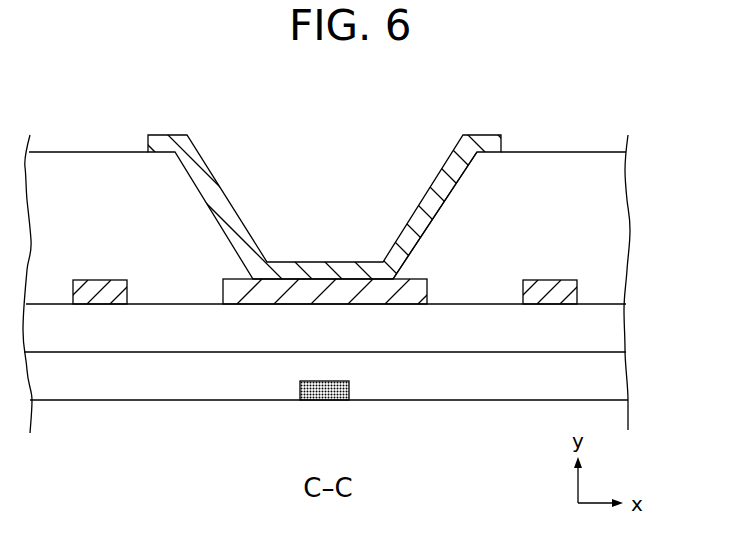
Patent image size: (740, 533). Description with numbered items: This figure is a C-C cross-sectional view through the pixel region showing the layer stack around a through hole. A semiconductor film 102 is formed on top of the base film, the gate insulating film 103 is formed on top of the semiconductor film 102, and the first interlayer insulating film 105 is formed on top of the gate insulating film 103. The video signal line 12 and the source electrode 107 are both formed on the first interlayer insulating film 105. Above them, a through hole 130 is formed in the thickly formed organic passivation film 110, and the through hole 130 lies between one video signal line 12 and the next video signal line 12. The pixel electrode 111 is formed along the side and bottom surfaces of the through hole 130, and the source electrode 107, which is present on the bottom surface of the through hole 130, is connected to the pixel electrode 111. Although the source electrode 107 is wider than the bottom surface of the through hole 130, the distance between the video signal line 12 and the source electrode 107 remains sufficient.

The video signal line 12 is at (100, 300).
The semiconductor film 102 is at (325, 400).
The gate insulating film 103 is at (613, 379).
The first interlayer insulating film 105 is at (612, 330).
The source electrode 107 is at (263, 293).
The organic passivation film 110 is at (619, 236).
The pixel electrode 111 is at (430, 190).
The through hole 130 is at (438, 213).